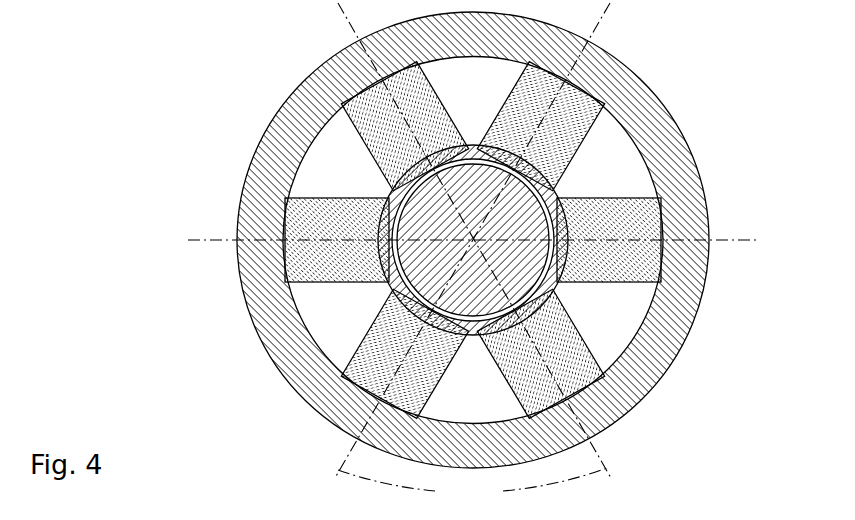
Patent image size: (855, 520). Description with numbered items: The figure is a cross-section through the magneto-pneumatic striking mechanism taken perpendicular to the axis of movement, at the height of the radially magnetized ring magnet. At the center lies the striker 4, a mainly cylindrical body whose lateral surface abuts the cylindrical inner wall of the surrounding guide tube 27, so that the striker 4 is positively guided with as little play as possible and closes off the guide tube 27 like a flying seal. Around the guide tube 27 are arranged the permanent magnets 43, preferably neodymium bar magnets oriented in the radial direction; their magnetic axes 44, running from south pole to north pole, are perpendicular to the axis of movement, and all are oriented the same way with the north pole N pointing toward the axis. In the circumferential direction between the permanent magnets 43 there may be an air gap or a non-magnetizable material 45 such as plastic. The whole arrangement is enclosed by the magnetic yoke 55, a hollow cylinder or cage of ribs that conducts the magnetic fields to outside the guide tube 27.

The striker 4 is at (498, 240).
The guide tube 27 is at (553, 283).
The permanent magnets 43 is at (367, 355).
The magnetic axes 44 is at (473, 254).
The non-magnetizable material 45 is at (317, 155).
The magnetic yoke 55 is at (273, 183).